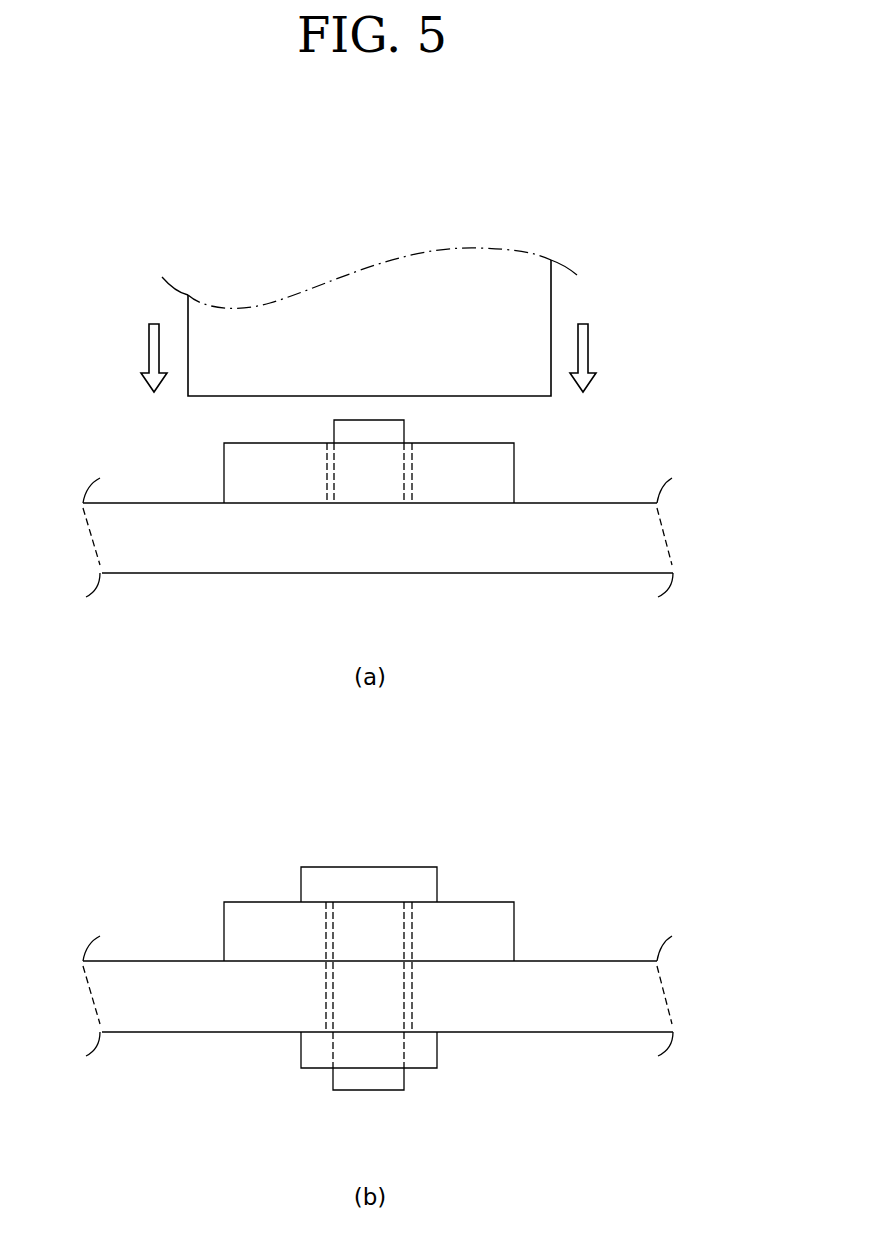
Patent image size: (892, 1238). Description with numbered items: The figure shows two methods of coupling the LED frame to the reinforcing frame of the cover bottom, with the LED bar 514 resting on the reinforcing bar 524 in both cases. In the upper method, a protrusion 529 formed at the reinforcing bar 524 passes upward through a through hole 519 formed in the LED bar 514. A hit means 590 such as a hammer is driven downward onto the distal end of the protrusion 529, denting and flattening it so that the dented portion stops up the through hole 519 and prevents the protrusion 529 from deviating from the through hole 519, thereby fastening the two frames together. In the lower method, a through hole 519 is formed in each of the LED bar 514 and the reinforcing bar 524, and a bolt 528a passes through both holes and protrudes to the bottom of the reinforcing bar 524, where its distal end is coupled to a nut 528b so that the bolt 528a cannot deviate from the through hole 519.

The hit means 590 is at (551, 305).
The protrusion 529 is at (404, 431).
The LED bar 514 is at (224, 480).
The through hole 519 is at (412, 467).
The reinforcing bar 524 is at (567, 553).
The bolt 528a is at (392, 867).
The nut 528b is at (301, 1048).